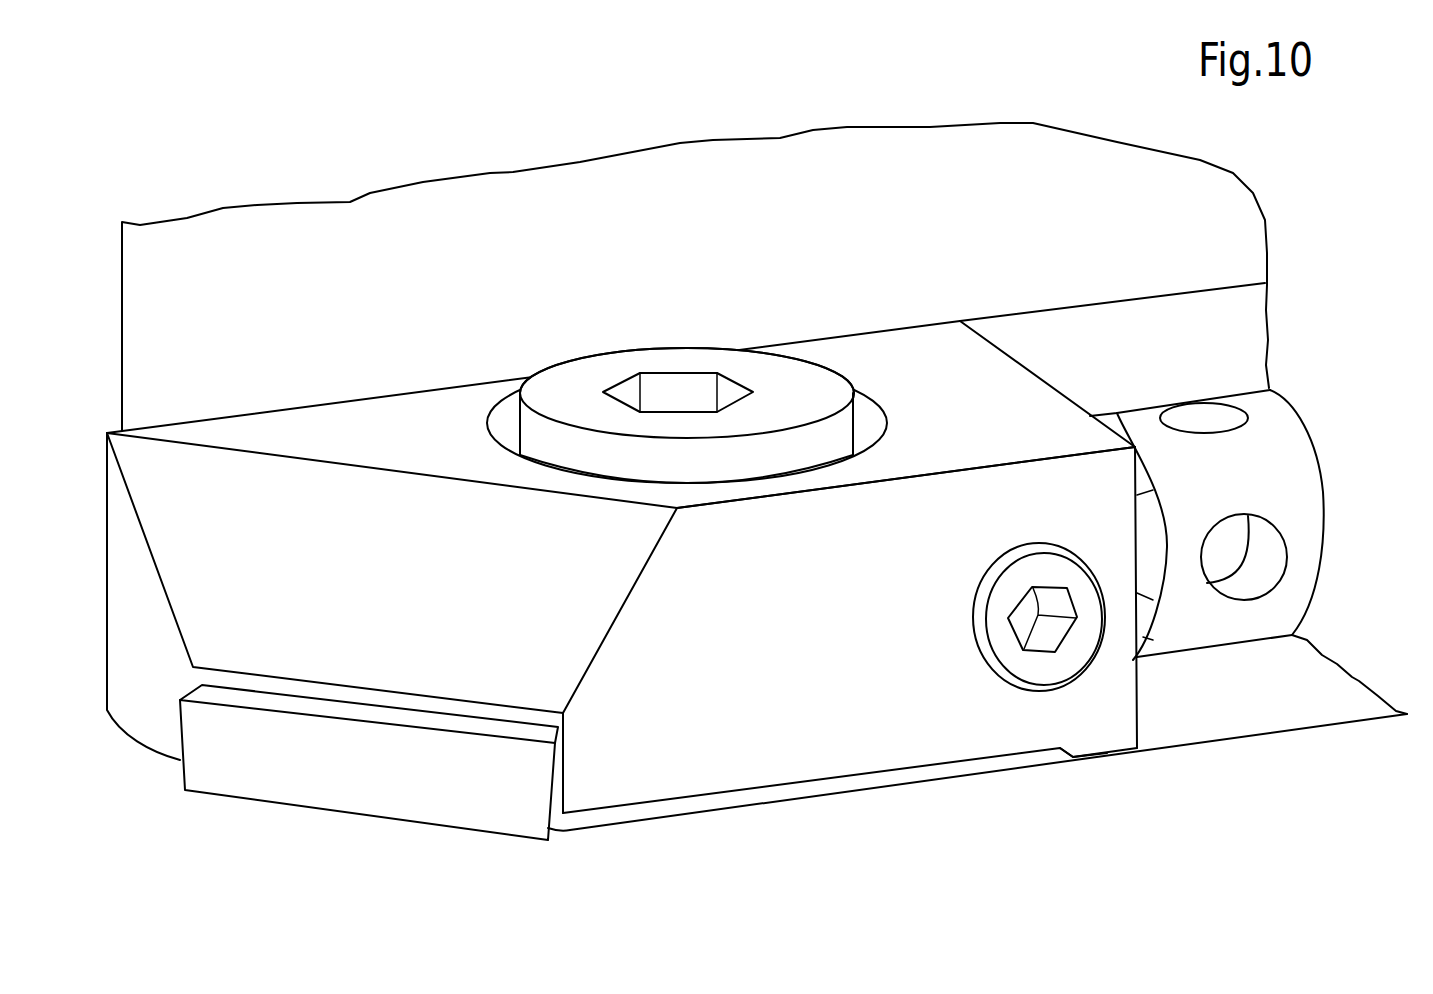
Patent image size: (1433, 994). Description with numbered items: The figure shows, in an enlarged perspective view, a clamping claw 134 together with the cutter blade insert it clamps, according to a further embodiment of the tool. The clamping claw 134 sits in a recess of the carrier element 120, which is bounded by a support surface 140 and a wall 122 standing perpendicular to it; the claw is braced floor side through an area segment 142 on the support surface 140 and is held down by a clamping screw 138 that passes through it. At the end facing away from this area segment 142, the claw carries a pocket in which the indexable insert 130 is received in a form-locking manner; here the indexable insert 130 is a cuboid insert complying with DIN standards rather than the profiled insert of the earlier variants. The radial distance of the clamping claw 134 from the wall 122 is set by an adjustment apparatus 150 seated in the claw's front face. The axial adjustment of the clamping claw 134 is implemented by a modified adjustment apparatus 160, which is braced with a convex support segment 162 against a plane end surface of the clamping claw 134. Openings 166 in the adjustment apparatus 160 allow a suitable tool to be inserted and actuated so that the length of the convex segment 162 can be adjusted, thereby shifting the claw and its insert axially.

The carrier element 120 is at (423, 231).
The wall 122 is at (618, 268).
The indexable insert 130 is at (335, 773).
The clamping claw 134 is at (988, 395).
The clamping screw 138 is at (680, 366).
The support surface 140 is at (650, 812).
The area segment 142 is at (1107, 754).
The adjustment apparatus 150 is at (1020, 694).
The modified adjustment apparatus 160 is at (1268, 434).
The convex support segment 162 is at (1152, 614).
The openings 166 is at (1268, 564).